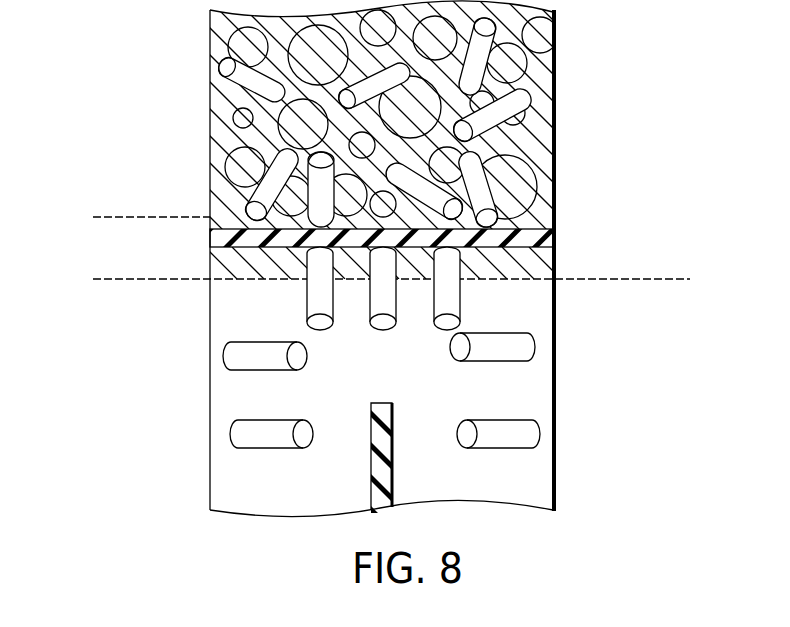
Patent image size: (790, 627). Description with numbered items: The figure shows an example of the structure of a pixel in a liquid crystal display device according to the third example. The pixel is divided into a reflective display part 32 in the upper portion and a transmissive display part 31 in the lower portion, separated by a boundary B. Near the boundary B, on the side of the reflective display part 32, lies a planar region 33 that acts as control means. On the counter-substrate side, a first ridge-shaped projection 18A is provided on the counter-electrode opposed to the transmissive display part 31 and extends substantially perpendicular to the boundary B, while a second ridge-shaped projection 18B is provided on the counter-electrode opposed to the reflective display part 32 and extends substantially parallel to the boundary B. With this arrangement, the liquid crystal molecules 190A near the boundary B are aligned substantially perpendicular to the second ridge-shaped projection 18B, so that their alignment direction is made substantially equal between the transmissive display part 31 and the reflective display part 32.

The reflective display part 32 is at (674, 2).
The transmissive display part 31 is at (672, 279).
The planar region 33 is at (89, 217).
The second ridge-shaped projection 18B is at (553, 238).
The first ridge-shaped projection 18A is at (382, 480).
The liquid crystal molecules 190A is at (322, 330).
The boundary B is at (522, 282).